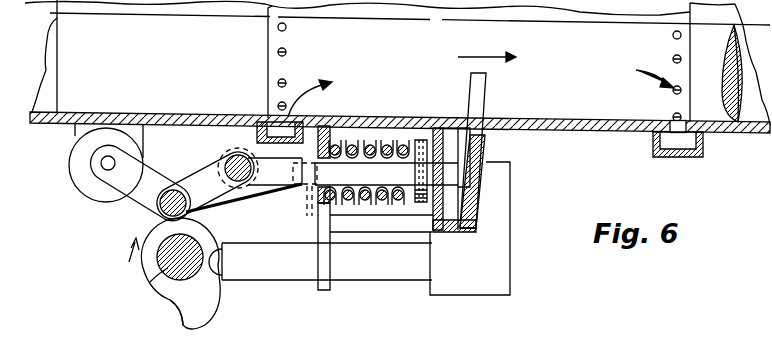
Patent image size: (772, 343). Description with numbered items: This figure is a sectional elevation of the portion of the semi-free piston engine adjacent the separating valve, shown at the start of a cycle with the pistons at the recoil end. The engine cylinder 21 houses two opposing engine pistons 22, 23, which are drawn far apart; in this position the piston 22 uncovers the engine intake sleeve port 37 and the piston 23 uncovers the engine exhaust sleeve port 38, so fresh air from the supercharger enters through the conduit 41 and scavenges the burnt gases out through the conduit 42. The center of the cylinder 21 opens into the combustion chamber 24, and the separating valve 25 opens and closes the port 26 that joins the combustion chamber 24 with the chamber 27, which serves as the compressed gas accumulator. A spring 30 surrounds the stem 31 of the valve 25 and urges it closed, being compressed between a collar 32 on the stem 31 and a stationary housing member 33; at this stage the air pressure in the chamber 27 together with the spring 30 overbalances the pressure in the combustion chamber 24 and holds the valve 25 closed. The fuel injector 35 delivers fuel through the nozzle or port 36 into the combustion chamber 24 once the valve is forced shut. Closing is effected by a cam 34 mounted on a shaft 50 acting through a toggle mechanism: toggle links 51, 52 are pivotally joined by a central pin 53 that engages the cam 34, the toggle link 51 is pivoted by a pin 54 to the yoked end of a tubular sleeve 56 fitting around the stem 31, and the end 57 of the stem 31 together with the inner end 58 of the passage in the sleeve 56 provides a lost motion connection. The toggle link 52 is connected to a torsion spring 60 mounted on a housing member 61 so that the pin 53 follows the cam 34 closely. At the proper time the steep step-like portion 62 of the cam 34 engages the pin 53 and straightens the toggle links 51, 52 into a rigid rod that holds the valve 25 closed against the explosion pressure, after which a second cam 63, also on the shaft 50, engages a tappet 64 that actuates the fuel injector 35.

The engine cylinder 21 is at (592, 132).
The engine piston 22 is at (208, 55).
The engine piston 23 is at (724, 53).
The combustion chamber 24 is at (487, 106).
The separating valve 25 is at (460, 128).
The port 26 is at (460, 133).
The chamber 27 is at (450, 216).
The spring 30 is at (353, 202).
The stem 31 is at (405, 178).
The collar 32 is at (423, 138).
The stationary housing member 33 is at (320, 134).
The cam 34 is at (220, 306).
The fuel injector 35 is at (511, 282).
The nozzle or port 36 is at (474, 186).
The engine intake sleeve port 37 is at (286, 28).
The engine exhaust sleeve port 38 is at (672, 117).
The conduit 41 is at (275, 175).
The conduit 42 is at (678, 150).
The shaft 50 is at (182, 272).
The toggle link 51 is at (204, 172).
The toggle link 52 is at (146, 196).
The central pin 53 is at (160, 209).
The pin 54 is at (238, 155).
The tubular sleeve 56 is at (260, 206).
The end of the stem 57 is at (308, 216).
The inner end of the tubular passage 58 is at (296, 190).
The torsion spring 60 is at (71, 151).
The housing member 61 is at (75, 131).
The step-like portion 62 is at (182, 318).
The cam 63 is at (150, 282).
The tappet 64 is at (289, 273).